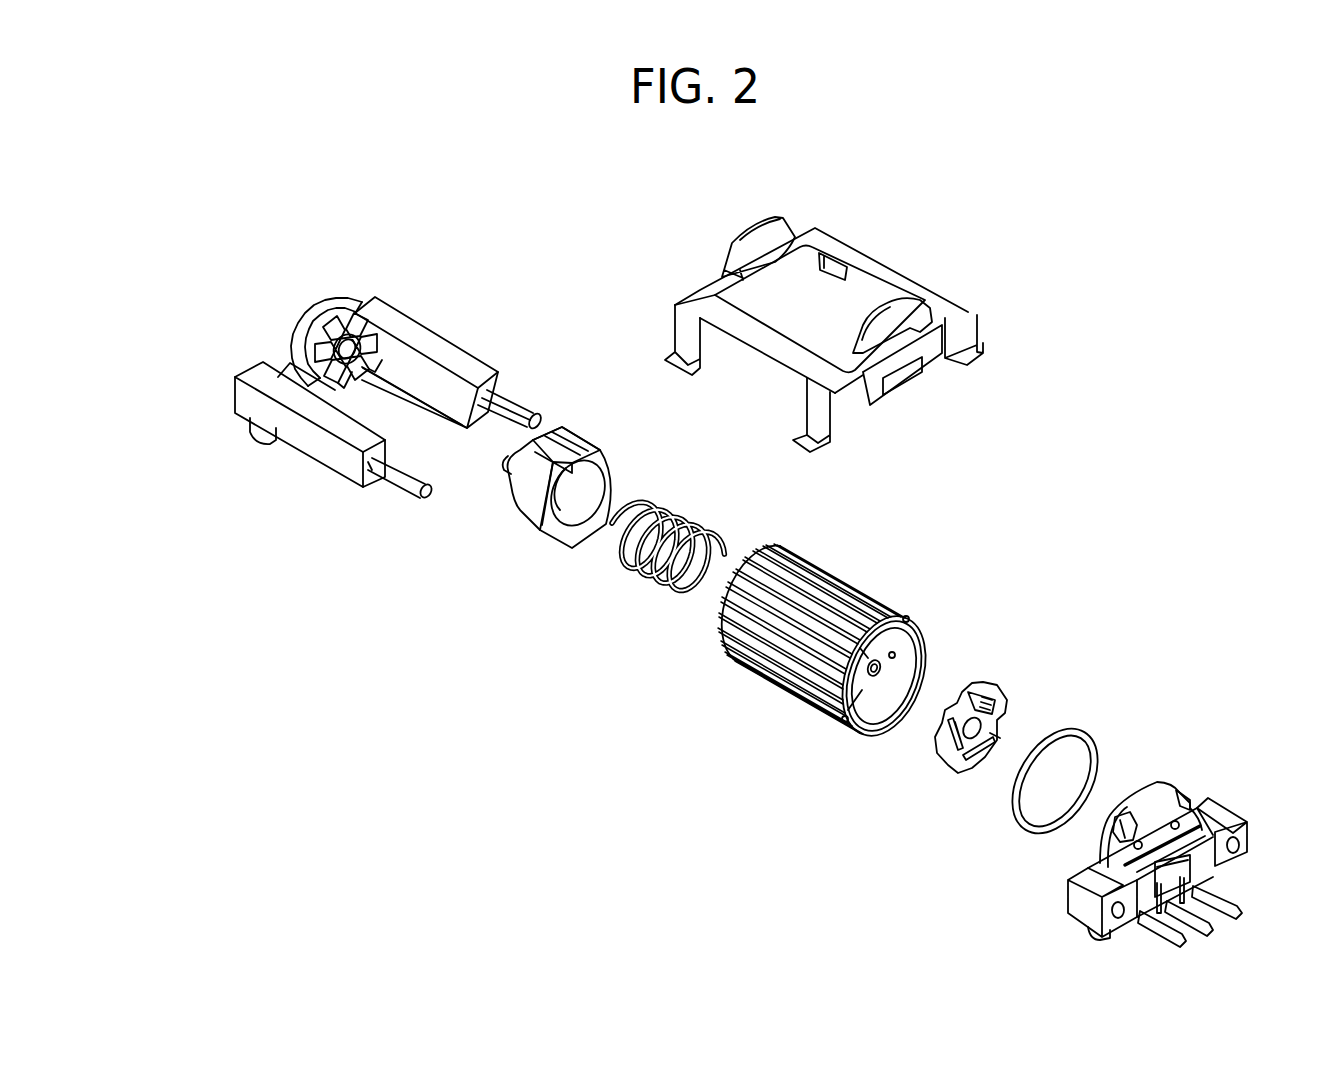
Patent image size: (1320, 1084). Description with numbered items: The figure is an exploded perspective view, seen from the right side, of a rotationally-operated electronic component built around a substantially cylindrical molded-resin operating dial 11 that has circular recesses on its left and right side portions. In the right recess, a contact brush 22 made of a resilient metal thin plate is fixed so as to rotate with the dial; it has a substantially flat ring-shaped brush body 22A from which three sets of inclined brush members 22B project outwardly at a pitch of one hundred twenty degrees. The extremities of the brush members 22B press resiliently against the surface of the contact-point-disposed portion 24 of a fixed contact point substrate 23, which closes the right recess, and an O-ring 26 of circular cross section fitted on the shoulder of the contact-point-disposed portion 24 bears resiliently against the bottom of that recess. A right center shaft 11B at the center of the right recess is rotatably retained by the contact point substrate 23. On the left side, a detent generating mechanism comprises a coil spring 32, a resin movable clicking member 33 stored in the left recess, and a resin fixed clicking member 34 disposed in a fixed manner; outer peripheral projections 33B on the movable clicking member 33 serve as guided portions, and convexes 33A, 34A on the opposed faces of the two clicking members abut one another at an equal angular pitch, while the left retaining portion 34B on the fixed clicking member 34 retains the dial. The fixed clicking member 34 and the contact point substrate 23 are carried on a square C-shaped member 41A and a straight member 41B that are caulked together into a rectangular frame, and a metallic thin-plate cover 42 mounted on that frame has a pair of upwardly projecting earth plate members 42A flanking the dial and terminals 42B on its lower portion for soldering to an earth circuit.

The operating dial 11 is at (768, 667).
The right center shaft 11B is at (847, 712).
The contact brush 22 is at (1005, 871).
The brush body 22A is at (955, 773).
The brush members 22B is at (940, 760).
The contact point substrate 23 is at (1160, 808).
The contact-point-disposed portion 24 is at (1100, 840).
The O-ring 26 is at (1077, 733).
The coil spring 32 is at (653, 583).
The movable clicking member 33 is at (557, 626).
The convexes 33A is at (512, 470).
The outer peripheral projections 33B is at (552, 453).
The fixed clicking member 34 is at (183, 238).
The convexes 34A is at (322, 312).
The left retaining portion 34B is at (340, 352).
The square C-shaped member 41A is at (453, 356).
The straight member 41B is at (1222, 813).
The cover 42 is at (908, 290).
The earth plate members 42A is at (890, 315).
The terminals 42B is at (980, 345).